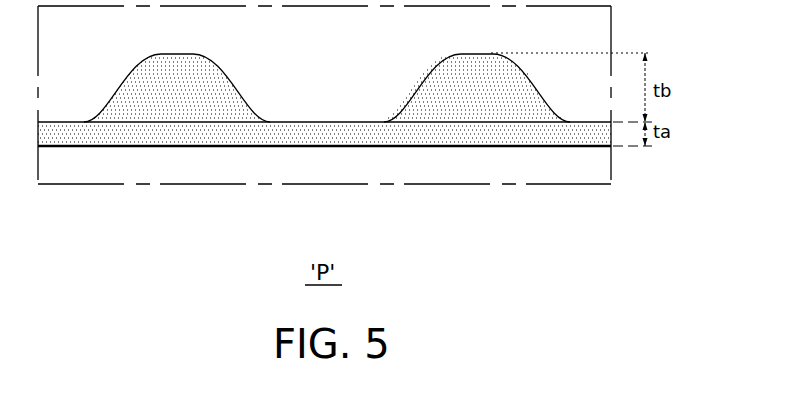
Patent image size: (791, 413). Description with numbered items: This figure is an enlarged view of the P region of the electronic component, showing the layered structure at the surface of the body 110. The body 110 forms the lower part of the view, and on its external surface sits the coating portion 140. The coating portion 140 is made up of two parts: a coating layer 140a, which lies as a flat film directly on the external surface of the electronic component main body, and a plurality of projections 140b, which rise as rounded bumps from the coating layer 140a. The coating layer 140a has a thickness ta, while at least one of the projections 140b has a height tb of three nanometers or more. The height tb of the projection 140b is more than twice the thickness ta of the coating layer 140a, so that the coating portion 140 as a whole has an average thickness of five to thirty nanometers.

The body 110 is at (600, 163).
The coating portion 140 is at (324, 165).
The coating layer 140a is at (444, 130).
The projections 140b is at (482, 103).